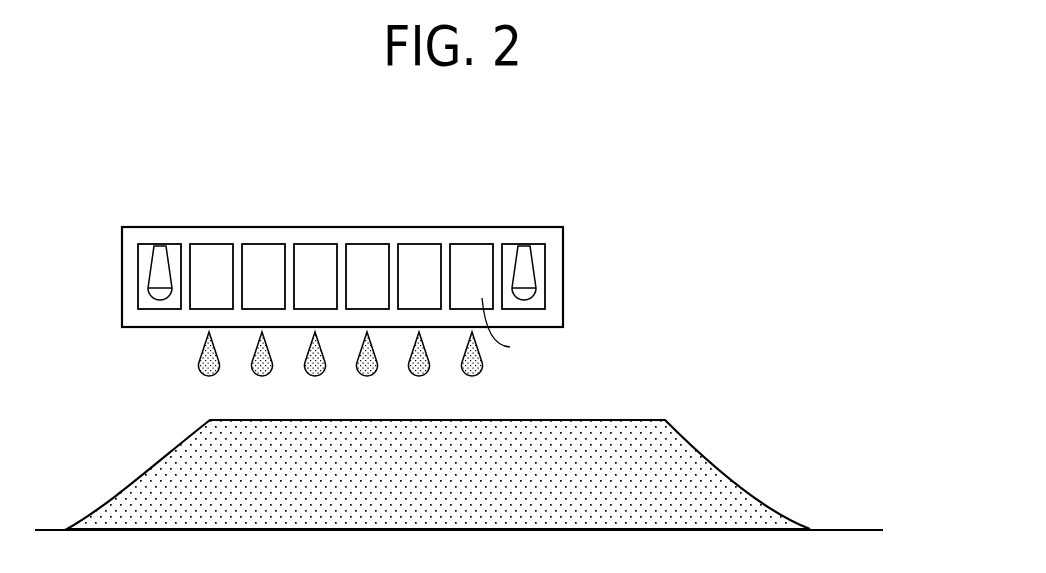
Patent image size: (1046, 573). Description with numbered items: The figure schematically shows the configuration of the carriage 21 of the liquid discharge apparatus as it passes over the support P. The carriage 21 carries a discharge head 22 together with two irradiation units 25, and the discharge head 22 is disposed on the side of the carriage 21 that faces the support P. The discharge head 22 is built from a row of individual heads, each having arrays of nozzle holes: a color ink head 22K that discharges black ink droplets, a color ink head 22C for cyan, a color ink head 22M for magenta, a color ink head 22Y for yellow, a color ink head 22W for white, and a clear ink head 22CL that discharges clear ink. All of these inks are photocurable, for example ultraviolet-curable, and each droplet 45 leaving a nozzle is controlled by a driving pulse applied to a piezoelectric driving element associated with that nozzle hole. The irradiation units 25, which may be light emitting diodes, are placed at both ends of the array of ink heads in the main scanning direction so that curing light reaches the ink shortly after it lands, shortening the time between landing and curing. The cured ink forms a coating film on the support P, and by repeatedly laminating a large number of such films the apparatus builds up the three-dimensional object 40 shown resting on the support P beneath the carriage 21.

The carriage 21 is at (552, 227).
The discharge head 22 is at (503, 143).
The color ink head 22K is at (207, 243).
The color ink head 22C is at (260, 243).
The color ink head 22M is at (312, 243).
The color ink head 22Y is at (366, 243).
The color ink head 22W is at (417, 243).
The clear ink head 22CL is at (468, 243).
The irradiation unit 25 is at (160, 246).
The three-dimensional object 40 is at (700, 453).
The droplet 45 is at (482, 362).
The support P is at (856, 529).